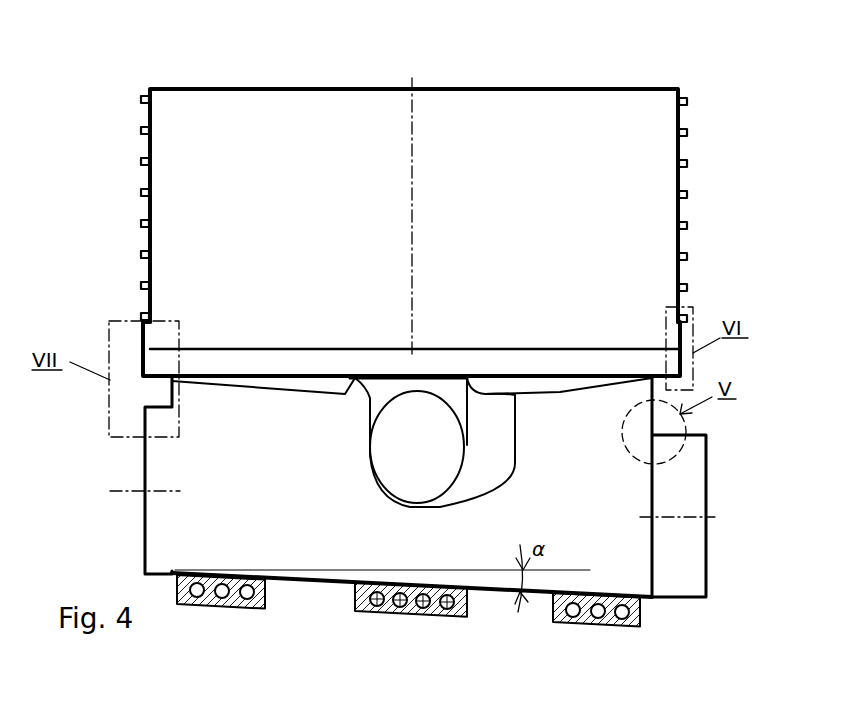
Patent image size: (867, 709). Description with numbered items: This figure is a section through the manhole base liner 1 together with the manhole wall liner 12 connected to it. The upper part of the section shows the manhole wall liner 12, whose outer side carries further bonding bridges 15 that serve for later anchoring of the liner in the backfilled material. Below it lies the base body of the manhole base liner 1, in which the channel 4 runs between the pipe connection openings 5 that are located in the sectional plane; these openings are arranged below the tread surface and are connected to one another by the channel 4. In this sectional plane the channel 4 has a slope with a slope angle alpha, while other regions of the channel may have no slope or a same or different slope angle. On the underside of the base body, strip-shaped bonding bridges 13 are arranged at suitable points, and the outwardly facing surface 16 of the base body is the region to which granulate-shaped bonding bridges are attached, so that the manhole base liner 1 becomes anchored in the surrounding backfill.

The manhole base liner 1 is at (597, 528).
The channel 4 is at (292, 528).
The pipe connection openings 5 is at (170, 472).
The manhole wall liner 12 is at (240, 138).
The strip-shaped bonding bridges 13 is at (587, 624).
The bonding bridges 15 is at (687, 256).
The outwardly facing surface 16 is at (312, 582).